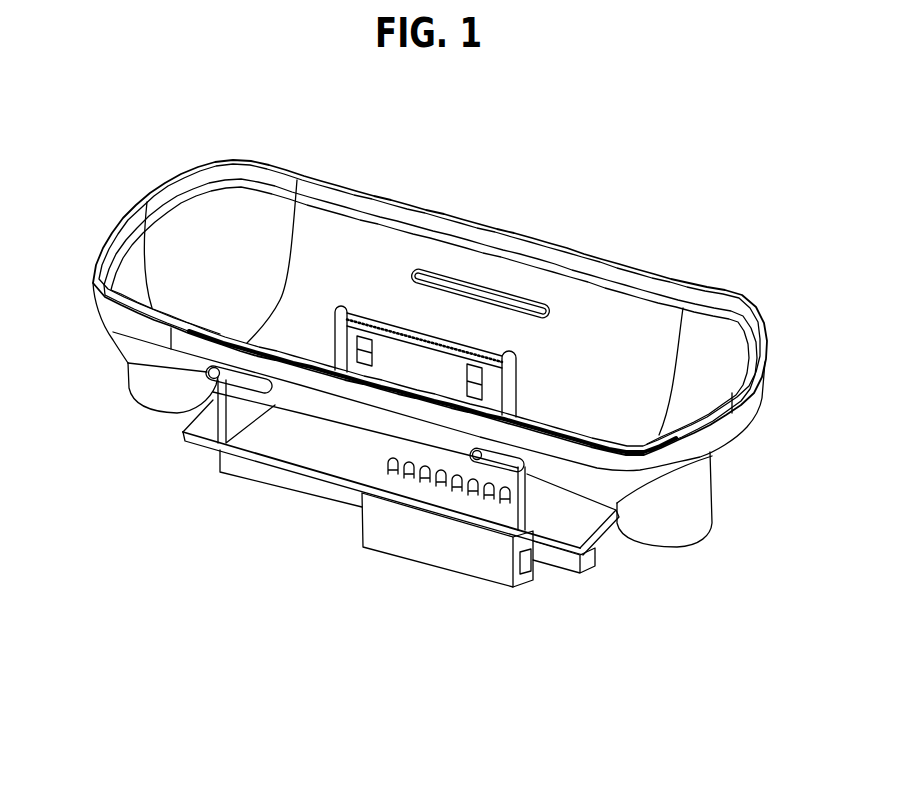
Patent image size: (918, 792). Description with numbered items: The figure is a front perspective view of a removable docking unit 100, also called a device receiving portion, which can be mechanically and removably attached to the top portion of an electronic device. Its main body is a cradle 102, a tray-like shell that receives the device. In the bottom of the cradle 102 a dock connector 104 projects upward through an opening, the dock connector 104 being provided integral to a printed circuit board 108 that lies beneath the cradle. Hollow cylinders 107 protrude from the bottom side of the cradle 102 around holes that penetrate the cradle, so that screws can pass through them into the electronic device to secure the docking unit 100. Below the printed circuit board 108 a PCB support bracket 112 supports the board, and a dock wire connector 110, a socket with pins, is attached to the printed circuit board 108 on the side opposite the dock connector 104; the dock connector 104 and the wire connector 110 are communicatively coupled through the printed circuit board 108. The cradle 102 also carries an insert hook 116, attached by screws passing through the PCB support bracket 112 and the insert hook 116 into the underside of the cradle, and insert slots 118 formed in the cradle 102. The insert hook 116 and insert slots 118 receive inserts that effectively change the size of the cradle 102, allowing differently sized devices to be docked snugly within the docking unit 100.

The removable docking unit 100 is at (140, 131).
The cradle 102 is at (643, 340).
The dock connector 104 is at (413, 360).
The hollow cylinders 107 is at (163, 390).
The printed circuit board 108 is at (280, 437).
The dock wire connector 110 is at (452, 555).
The PCB support bracket 112 is at (303, 485).
The insert hook 116 is at (510, 297).
The insert slots 118 is at (207, 373).